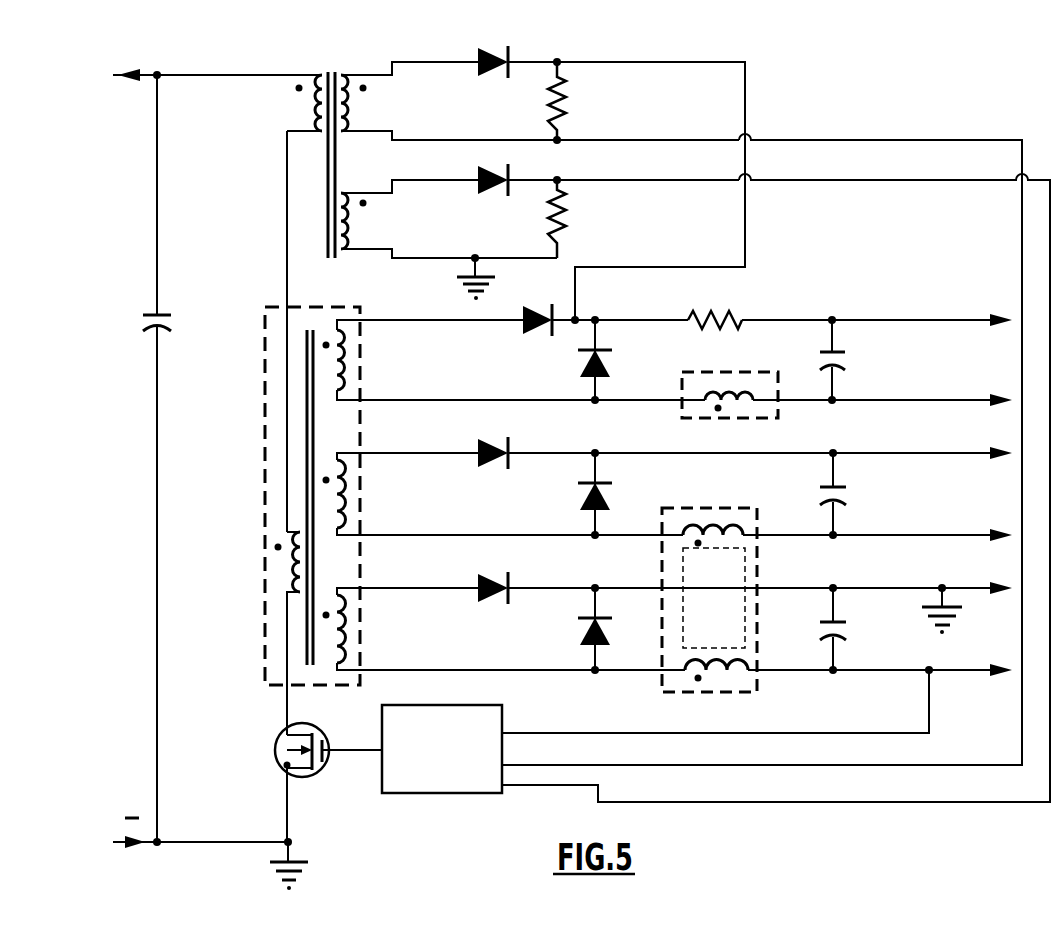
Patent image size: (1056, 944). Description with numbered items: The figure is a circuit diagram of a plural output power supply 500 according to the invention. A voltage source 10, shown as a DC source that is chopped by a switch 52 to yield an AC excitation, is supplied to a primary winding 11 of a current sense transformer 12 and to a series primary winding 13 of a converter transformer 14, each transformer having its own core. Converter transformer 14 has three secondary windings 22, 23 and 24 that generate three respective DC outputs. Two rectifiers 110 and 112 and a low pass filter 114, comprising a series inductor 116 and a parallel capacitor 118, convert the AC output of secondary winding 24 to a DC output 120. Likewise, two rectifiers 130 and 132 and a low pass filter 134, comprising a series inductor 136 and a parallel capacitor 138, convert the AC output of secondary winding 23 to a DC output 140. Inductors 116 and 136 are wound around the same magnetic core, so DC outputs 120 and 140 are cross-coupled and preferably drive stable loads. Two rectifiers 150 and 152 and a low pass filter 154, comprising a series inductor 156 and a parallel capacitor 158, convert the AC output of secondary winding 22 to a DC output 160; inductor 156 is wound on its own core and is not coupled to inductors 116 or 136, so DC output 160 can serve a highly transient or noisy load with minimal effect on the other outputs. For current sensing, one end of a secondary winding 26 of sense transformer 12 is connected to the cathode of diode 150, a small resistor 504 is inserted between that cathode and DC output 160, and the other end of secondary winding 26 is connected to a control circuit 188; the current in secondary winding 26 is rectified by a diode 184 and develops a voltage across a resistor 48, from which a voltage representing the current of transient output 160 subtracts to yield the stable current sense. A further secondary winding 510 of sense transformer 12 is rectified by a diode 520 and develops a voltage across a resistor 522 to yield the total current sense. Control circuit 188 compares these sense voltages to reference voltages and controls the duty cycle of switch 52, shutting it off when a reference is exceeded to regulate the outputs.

The voltage source 10 is at (132, 70).
The power supply 500 is at (118, 450).
The current sense transformer 12 is at (345, 66).
The primary winding 11 is at (317, 132).
The secondary winding 26 is at (352, 103).
The secondary winding 510 is at (352, 221).
The diode 184 is at (487, 47).
The resistor 48 is at (563, 100).
The diode 520 is at (478, 172).
The resistor 522 is at (563, 220).
The converter transformer 14 is at (255, 403).
The series primary winding 13 is at (290, 588).
The secondary winding 22 is at (347, 349).
The secondary winding 23 is at (347, 485).
The secondary winding 24 is at (347, 618).
The rectifier 150 is at (523, 328).
The rectifier 152 is at (578, 368).
The resistor 504 is at (740, 310).
The series inductor 156 is at (730, 387).
The parallel capacitor 158 is at (823, 348).
The DC output 160 is at (983, 320).
The low pass filter 154 is at (852, 409).
The rectifier 130 is at (512, 443).
The rectifier 132 is at (578, 502).
The series inductor 136 is at (703, 513).
The parallel capacitor 138 is at (840, 483).
The DC output 140 is at (938, 453).
The low pass filter 134 is at (854, 544).
The rectifier 110 is at (512, 577).
The rectifier 112 is at (578, 638).
The series inductor 116 is at (750, 660).
The parallel capacitor 118 is at (827, 618).
The DC output 120 is at (943, 668).
The low pass filter 114 is at (854, 679).
The switch 52 is at (290, 740).
The control circuit 188 is at (450, 705).